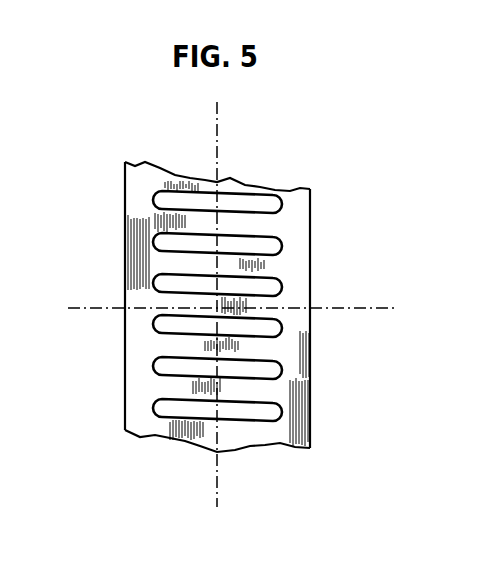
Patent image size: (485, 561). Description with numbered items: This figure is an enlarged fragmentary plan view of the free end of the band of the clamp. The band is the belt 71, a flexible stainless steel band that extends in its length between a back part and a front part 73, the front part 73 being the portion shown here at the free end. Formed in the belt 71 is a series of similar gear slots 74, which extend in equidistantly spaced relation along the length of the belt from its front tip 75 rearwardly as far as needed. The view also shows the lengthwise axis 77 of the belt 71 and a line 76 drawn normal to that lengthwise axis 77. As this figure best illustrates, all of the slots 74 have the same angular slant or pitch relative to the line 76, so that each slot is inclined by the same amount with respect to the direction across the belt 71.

The belt 71 is at (310, 263).
The front part 73 is at (137, 370).
The gear slots 74 is at (153, 200).
The front tip 75 is at (247, 185).
The line 76 is at (358, 312).
The lengthwise axis 77 is at (220, 482).